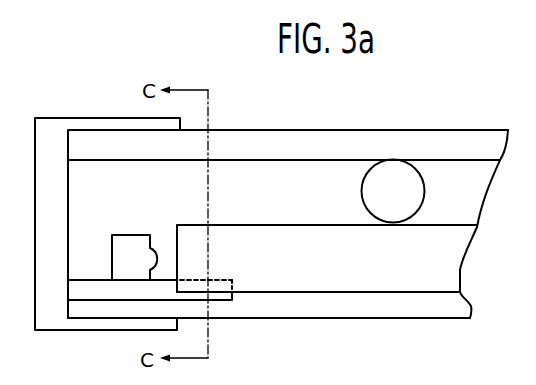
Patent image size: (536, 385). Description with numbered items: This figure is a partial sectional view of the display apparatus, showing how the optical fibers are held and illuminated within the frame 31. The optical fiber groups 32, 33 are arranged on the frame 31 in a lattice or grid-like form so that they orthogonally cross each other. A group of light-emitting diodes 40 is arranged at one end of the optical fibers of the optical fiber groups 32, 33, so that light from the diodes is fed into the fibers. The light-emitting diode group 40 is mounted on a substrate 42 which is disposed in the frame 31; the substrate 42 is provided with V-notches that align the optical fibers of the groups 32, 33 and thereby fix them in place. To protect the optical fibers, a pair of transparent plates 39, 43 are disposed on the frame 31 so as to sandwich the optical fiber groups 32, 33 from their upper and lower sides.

The frame 31 is at (57, 205).
The transparent plate 39 is at (357, 147).
The optical fiber group 32 is at (405, 172).
The optical fiber group 33 is at (358, 283).
The transparent plate 43 is at (407, 310).
The substrate 42 is at (108, 331).
The light-emitting diode group 40 is at (136, 233).